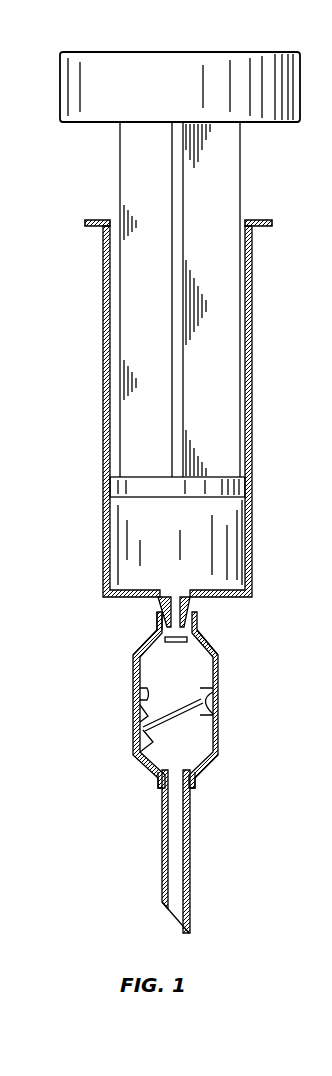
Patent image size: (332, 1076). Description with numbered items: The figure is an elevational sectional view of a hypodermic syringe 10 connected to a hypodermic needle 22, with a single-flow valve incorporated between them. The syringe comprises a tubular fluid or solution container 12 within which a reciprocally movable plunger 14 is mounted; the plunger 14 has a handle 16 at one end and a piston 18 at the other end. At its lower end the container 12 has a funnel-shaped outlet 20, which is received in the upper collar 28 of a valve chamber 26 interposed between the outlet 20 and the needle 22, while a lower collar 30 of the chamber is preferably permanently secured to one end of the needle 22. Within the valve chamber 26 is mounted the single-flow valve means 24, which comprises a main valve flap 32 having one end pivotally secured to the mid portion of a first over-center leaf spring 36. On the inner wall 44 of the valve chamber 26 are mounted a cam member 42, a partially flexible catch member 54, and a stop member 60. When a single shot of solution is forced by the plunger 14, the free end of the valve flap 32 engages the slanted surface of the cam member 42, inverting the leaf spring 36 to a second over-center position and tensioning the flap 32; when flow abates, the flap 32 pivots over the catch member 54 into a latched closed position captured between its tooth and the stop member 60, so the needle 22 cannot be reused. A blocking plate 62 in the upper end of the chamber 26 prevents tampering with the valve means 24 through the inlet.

The hypodermic syringe 10 is at (72, 333).
The tubular fluid or solution container 12 is at (253, 545).
The plunger 14 is at (140, 176).
The handle 16 is at (151, 58).
The piston 18 is at (158, 487).
The funnel-shaped outlet 20 is at (190, 599).
The needle 22 is at (190, 842).
The single-flow valve means 24 is at (123, 700).
The valve chamber 26 is at (219, 718).
The upper collar 28 is at (157, 615).
The lower collar 30 is at (158, 786).
The main valve flap 32 is at (183, 713).
The first over-center leaf spring 36 is at (207, 692).
The cam member 42 is at (140, 745).
The inner wall 44 is at (131, 652).
The catch member 54 is at (140, 716).
The stop member 60 is at (138, 690).
The blocking plate 62 is at (176, 643).